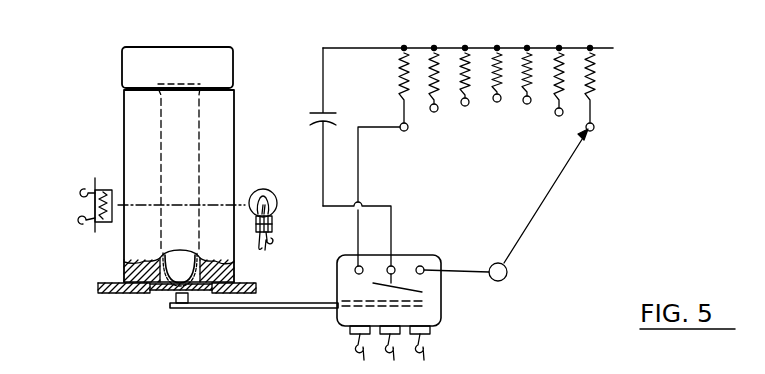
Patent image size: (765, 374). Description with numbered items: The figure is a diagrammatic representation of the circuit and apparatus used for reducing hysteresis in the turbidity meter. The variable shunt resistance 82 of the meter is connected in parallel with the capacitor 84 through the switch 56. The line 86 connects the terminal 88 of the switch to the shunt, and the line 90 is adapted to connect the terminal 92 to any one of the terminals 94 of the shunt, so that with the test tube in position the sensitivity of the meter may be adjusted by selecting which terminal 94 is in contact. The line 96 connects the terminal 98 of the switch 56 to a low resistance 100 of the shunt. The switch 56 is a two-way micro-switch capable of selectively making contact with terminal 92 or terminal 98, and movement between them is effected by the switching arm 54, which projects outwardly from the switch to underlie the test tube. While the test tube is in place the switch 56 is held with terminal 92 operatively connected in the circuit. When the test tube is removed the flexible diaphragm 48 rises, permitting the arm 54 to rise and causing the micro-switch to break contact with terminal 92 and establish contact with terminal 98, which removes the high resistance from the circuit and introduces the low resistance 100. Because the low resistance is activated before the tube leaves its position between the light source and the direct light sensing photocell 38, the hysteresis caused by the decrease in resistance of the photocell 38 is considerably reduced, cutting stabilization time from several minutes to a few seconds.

The direct light sensing photocell 38 is at (100, 232).
The flexible diaphragm 48 is at (165, 285).
The control arm 54 is at (247, 308).
The switch 56 is at (442, 318).
The variable shunt resistance 82 is at (503, 47).
The capacitor 84 is at (312, 112).
The line 86 is at (393, 228).
The terminal 88 is at (396, 266).
The line 90 is at (540, 218).
The terminal 92 is at (420, 274).
The terminals 94 is at (583, 128).
The line 96 is at (358, 166).
The terminal 98 is at (355, 270).
The low resistance 100 is at (402, 88).